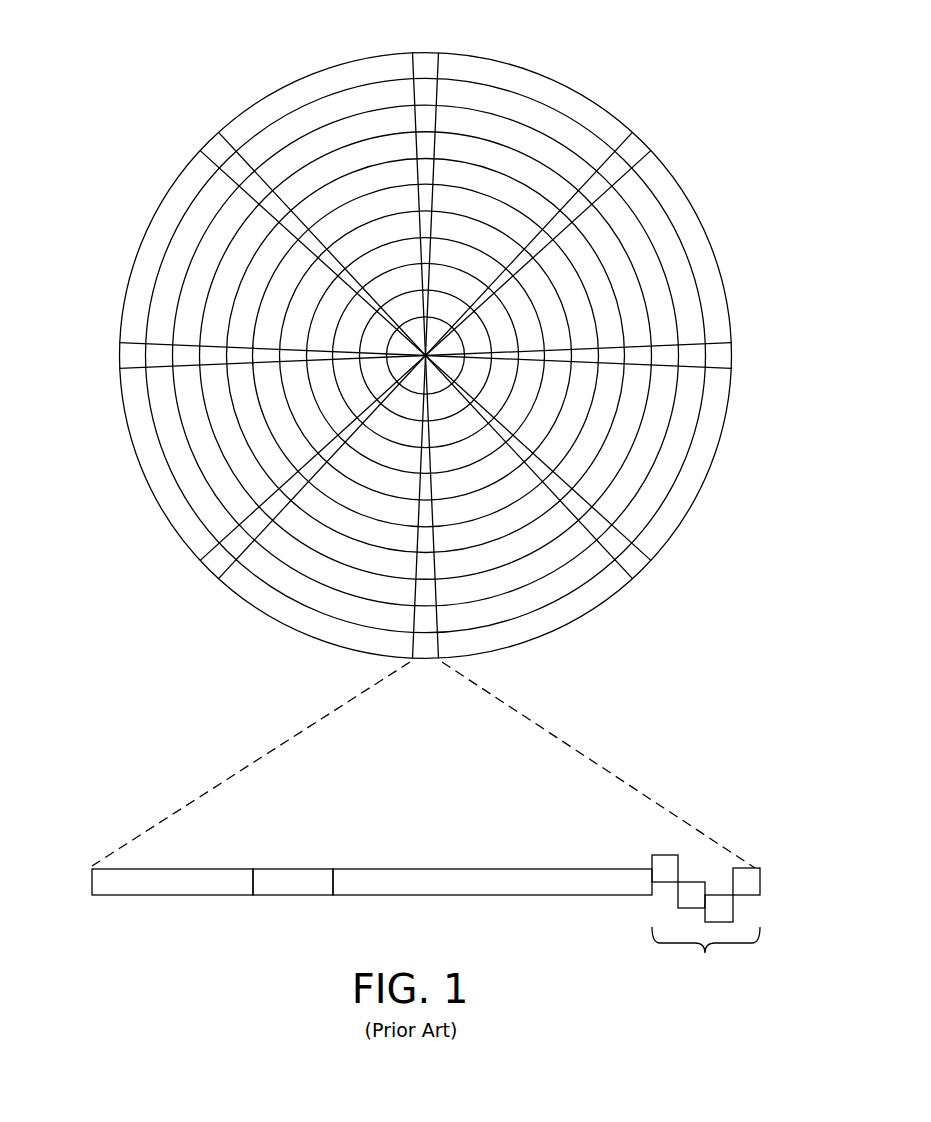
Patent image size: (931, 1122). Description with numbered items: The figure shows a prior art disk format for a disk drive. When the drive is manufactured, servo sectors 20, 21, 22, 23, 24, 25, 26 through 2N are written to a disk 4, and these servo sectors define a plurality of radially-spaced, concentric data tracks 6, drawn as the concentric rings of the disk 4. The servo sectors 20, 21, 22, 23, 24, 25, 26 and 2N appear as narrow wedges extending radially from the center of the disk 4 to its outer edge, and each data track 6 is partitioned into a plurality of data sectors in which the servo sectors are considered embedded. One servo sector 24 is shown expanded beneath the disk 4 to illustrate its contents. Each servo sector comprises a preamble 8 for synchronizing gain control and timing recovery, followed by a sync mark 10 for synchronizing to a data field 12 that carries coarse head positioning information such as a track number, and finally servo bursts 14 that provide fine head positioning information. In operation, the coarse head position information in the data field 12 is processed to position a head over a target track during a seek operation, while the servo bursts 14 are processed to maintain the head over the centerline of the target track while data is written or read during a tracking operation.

The disk 4 is at (200, 57).
The data track 6 is at (529, 113).
The servo sector 20 is at (427, 62).
The servo sector 21 is at (635, 150).
The servo sector 22 is at (726, 357).
The servo sector 23 is at (635, 563).
The servo sector 24 is at (289, 727).
The servo sector 25 is at (215, 565).
The servo sector 26 is at (120, 353).
The servo sector 2N is at (217, 147).
The preamble 8 is at (152, 897).
The sync mark 10 is at (290, 897).
The data field 12 is at (480, 897).
The servo bursts 14 is at (640, 838).